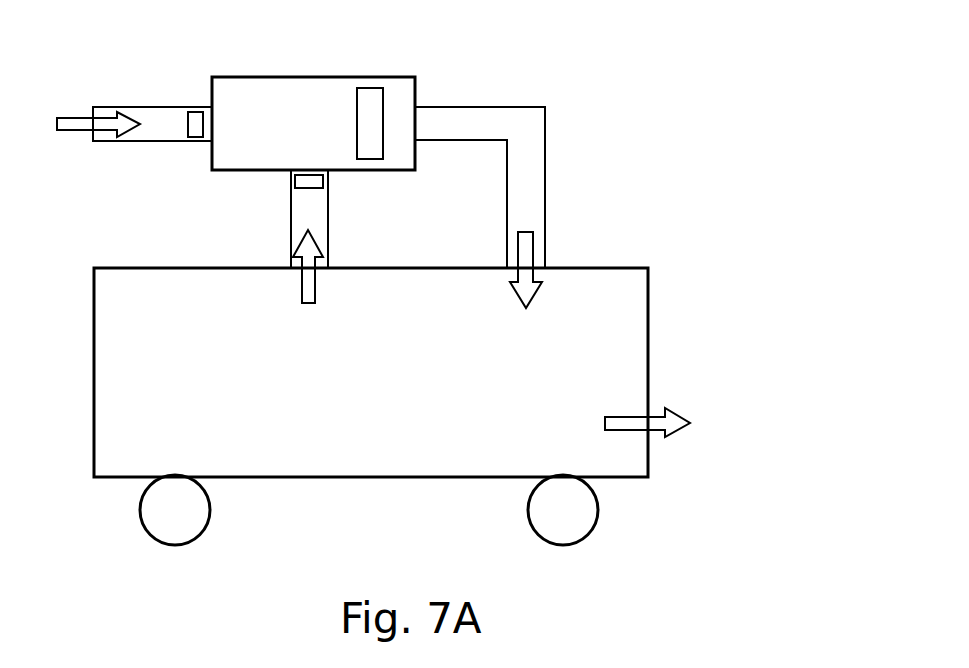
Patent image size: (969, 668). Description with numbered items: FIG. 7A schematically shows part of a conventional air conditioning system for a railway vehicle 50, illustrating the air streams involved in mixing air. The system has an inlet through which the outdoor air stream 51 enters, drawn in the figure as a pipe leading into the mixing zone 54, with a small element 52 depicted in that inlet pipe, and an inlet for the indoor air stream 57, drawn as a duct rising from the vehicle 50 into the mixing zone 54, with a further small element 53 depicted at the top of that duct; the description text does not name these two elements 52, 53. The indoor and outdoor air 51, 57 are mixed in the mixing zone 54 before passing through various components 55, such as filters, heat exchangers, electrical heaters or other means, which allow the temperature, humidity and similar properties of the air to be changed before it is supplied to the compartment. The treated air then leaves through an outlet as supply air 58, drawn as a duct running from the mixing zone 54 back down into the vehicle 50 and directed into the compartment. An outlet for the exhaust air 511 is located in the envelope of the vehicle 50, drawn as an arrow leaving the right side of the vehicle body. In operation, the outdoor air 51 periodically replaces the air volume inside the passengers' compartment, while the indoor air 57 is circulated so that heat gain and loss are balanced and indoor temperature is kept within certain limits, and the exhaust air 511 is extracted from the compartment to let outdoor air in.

The railway vehicle 50 is at (152, 320).
The outdoor air stream 51 is at (87, 119).
The inlet sensor 52 is at (193, 114).
The outlet sensor 53 is at (323, 181).
The mixing zone 54 is at (317, 107).
The components 55 is at (370, 107).
The indoor air stream 57 is at (295, 265).
The supply air 58 is at (528, 248).
The exhaust air 511 is at (678, 410).